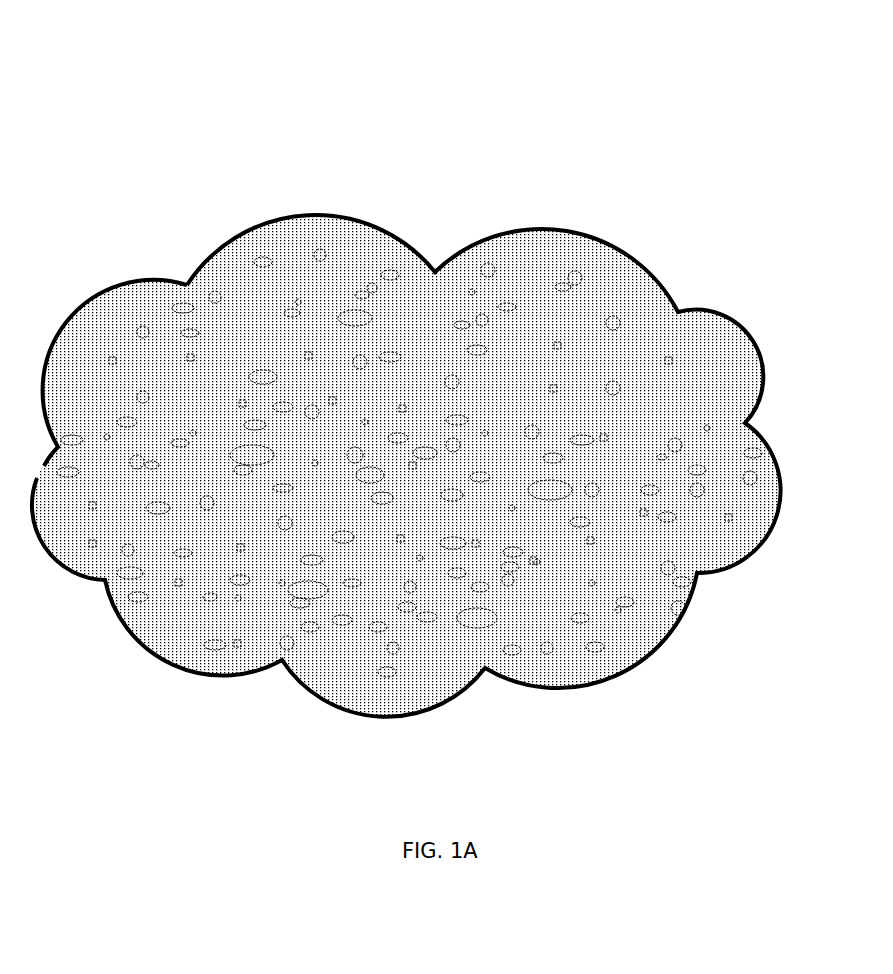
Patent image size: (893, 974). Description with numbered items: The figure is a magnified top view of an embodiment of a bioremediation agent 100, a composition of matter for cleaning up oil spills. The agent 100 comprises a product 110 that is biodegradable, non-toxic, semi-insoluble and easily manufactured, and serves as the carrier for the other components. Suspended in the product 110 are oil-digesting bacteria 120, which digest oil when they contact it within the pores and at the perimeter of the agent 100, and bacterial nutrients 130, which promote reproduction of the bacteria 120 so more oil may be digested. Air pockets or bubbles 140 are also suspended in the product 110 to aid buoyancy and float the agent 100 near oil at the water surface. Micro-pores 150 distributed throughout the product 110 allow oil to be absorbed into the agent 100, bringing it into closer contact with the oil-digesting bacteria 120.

The bioremediation agent 100 is at (406, 412).
The product 110 is at (97, 312).
The oil-digesting bacterium 120 is at (568, 312).
The bacterial nutrient 130 is at (230, 647).
The air pocket or bubble 140 is at (485, 262).
The micro-pore 150 is at (485, 663).